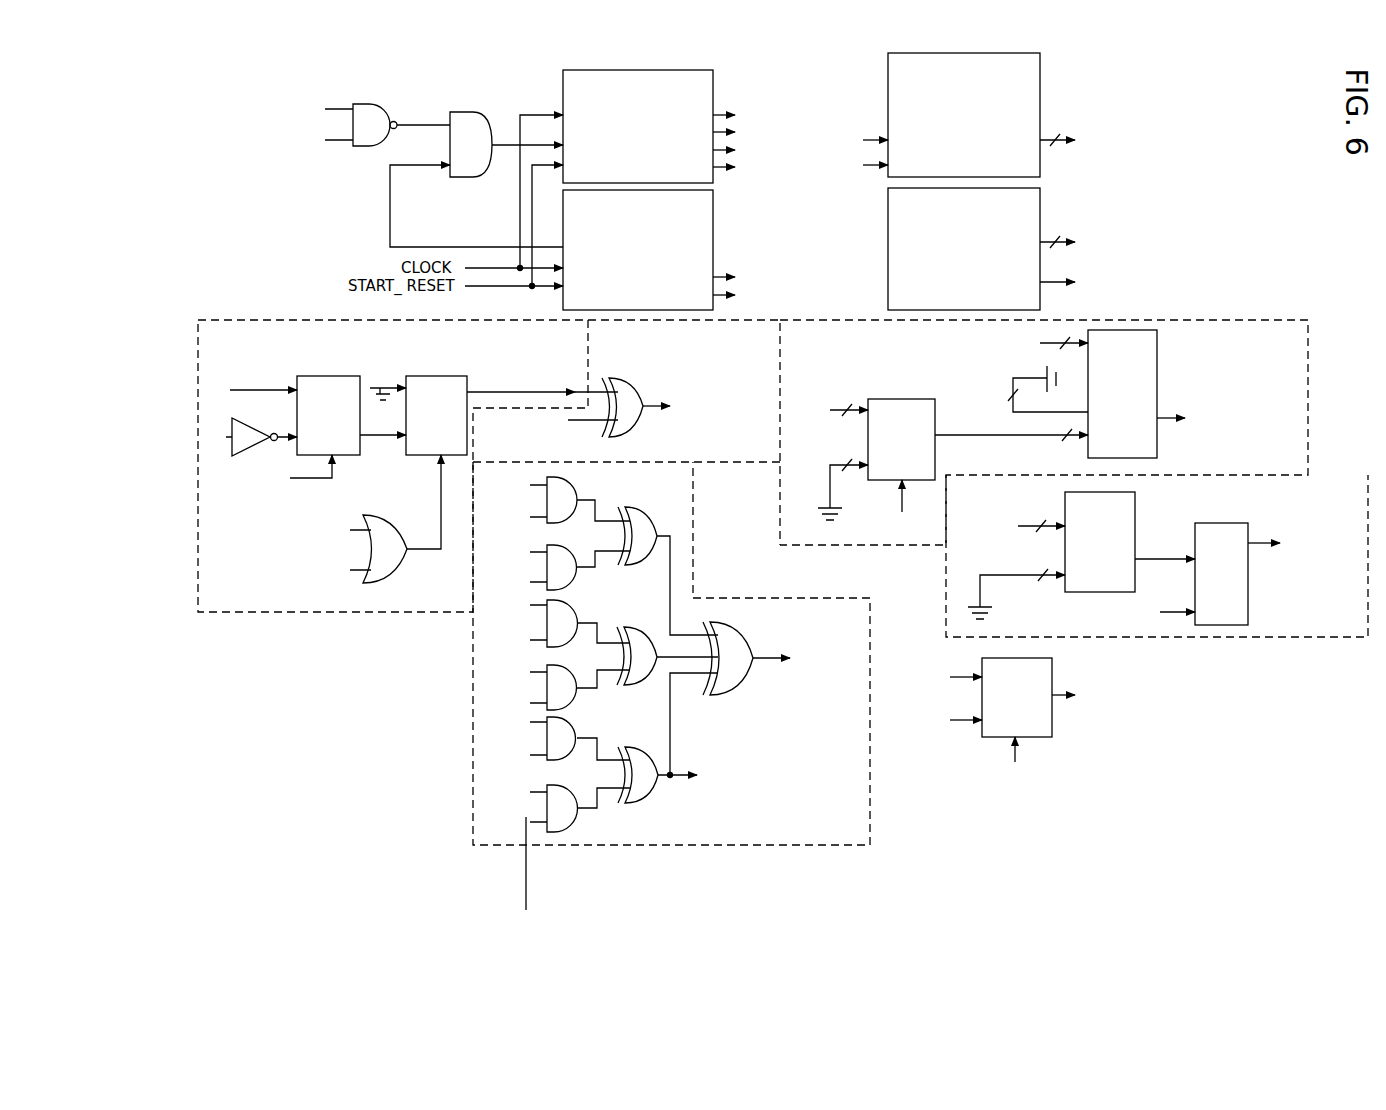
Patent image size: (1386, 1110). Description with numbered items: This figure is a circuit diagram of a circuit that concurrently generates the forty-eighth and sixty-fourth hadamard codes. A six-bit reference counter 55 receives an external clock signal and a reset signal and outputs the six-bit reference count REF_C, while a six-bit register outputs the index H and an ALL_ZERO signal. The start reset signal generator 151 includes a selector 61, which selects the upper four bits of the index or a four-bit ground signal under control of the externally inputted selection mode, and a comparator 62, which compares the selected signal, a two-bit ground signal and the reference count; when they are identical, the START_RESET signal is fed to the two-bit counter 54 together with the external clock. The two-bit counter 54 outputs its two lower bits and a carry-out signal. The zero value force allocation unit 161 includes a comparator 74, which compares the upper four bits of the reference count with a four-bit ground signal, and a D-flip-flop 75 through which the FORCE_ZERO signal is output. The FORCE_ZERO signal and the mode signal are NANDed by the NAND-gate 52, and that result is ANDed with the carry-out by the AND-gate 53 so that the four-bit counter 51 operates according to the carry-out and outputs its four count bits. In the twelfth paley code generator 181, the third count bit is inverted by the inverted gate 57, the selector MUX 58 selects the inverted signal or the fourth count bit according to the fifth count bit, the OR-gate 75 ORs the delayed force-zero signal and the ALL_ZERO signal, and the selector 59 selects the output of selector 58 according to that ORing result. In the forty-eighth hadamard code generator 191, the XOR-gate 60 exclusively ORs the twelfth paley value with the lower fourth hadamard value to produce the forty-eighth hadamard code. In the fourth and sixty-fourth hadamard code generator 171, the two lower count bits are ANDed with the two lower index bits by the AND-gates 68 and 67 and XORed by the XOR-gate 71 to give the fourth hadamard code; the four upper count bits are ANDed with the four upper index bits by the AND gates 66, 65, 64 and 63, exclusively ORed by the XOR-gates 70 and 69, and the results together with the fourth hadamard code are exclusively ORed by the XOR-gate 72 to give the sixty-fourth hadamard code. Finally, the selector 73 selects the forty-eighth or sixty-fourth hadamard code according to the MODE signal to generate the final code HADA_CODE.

The 4-bit counter 51 is at (713, 88).
The NAND-gate 52 is at (366, 104).
The AND-gate 53 is at (473, 112).
The 2-bit counter 54 is at (713, 207).
The 6-bit reference counter 55 is at (1040, 72).
The inverted gate 57 is at (243, 456).
The selector MUX 58 is at (1040, 205).
The selector 59 is at (438, 376).
The XOR-gate 60 is at (636, 428).
The selector 61 is at (905, 399).
The comparator 62 is at (1157, 372).
The AND gate 63 is at (572, 520).
The AND gate 64 is at (572, 586).
The AND gate 65 is at (572, 644).
The AND gate 66 is at (572, 706).
The AND-gate 67 is at (570, 758).
The AND-gate 68 is at (576, 826).
The XOR-gate 69 is at (633, 565).
The XOR-gate 70 is at (632, 685).
The XOR-gate 71 is at (640, 797).
The XOR-gate 72 is at (730, 695).
The selector 73 is at (1052, 728).
The comparator 74 is at (1135, 512).
The D-flip-flop 75 is at (402, 568).
The start reset signal generator 151 is at (1308, 378).
The "0" value force allocation unit 161 is at (1355, 475).
The 4th and 64th hadamard code generator 171 is at (772, 598).
The 12th paley code generator 181 is at (357, 612).
The 48th hadamard code generator 191 is at (737, 462).